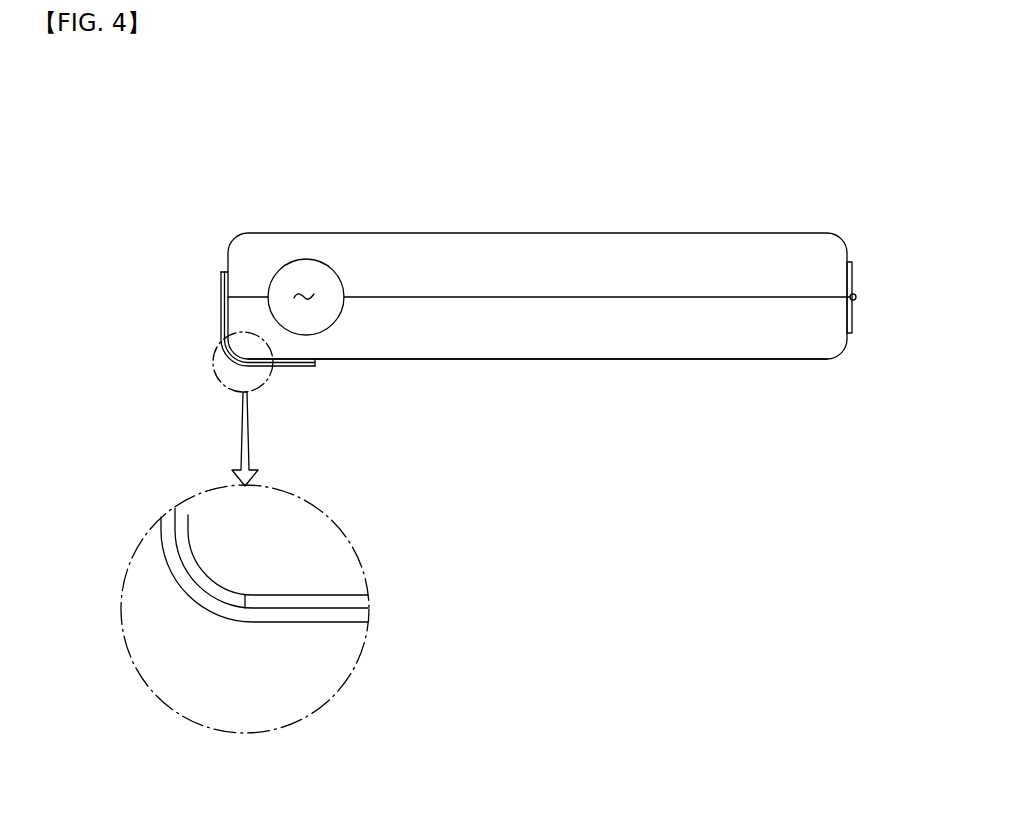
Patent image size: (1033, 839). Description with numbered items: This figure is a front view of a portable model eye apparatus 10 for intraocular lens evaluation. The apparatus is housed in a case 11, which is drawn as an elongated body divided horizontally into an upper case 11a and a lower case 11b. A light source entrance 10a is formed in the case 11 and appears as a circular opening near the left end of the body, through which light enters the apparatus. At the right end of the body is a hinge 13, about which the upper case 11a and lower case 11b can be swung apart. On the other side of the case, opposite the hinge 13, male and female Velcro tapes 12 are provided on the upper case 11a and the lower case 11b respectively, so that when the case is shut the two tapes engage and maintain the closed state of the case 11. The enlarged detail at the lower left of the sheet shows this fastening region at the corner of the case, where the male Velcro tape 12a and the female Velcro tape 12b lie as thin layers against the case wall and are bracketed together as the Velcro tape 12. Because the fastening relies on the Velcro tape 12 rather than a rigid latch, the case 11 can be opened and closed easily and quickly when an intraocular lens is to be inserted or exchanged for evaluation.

The portable model eye apparatus 10 is at (272, 148).
The light source entrance 10a is at (304, 290).
The case 11 is at (595, 214).
The upper case 11a is at (471, 265).
The lower case 11b is at (472, 330).
The Velcro tape 12 is at (300, 782).
The male Velcro tape 12a is at (223, 612).
The female Velcro tape 12b is at (292, 602).
The hinge 13 is at (854, 281).